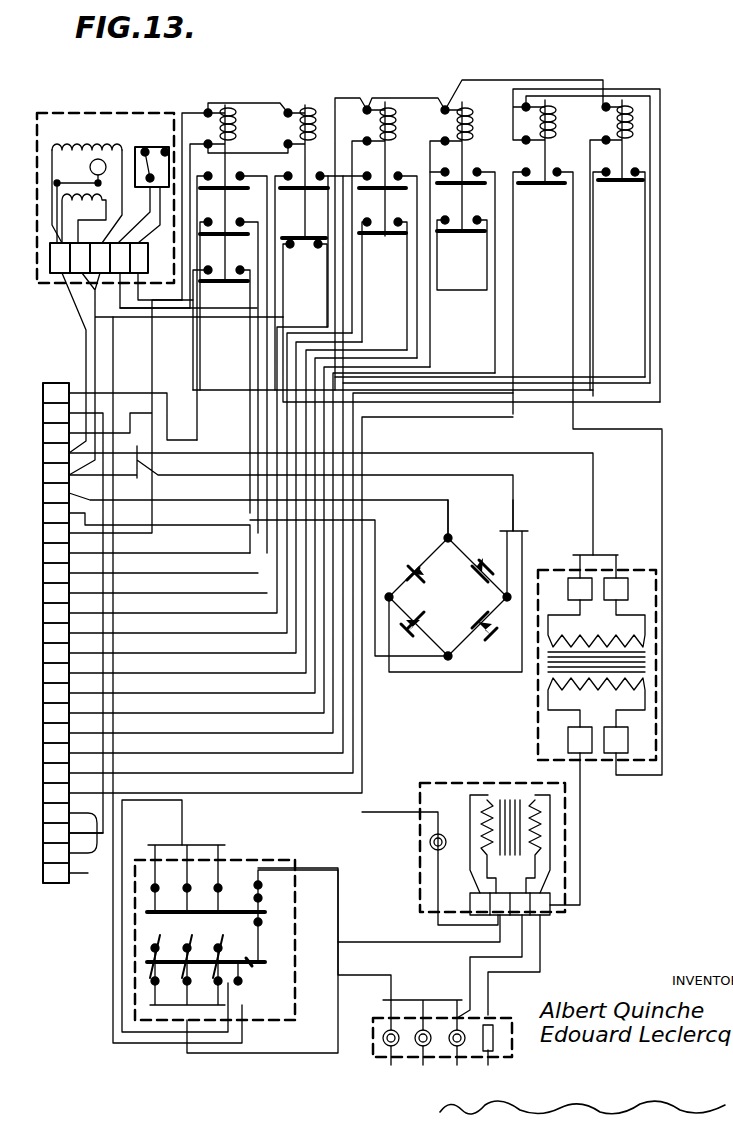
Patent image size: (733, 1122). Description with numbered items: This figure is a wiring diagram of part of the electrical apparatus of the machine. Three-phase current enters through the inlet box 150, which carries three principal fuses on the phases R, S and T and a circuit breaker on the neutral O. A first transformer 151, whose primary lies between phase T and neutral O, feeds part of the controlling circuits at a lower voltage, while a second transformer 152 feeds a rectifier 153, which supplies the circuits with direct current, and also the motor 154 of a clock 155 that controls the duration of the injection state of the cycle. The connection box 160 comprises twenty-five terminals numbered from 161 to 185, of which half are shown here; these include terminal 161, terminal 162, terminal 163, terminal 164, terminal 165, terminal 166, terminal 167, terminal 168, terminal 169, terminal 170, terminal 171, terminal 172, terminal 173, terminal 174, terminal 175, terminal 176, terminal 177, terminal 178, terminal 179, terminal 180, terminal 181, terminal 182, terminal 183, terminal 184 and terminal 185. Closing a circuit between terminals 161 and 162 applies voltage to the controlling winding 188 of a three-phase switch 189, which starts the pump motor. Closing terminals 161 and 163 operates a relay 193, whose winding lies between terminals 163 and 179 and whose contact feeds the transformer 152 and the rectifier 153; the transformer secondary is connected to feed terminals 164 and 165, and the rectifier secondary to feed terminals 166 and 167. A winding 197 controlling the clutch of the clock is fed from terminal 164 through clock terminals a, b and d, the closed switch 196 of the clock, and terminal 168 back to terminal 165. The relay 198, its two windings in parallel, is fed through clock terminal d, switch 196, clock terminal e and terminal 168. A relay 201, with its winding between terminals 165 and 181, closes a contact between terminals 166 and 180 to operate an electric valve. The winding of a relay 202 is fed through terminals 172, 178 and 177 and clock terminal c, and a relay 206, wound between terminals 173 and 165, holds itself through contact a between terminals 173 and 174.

The inlet box 150 is at (515, 1018).
The first transformer 151 is at (503, 793).
The second transformer 152 is at (540, 690).
The rectifier 153 is at (389, 586).
The motor of the clock 154 is at (88, 143).
The clock 155 is at (90, 118).
The connection box 160 is at (57, 383).
The terminal 161 is at (56, 393).
The terminal 162 is at (56, 413).
The terminal 163 is at (56, 433).
The feed terminal 164 is at (56, 453).
The feed terminal 165 is at (56, 473).
The feed terminal 166 is at (56, 493).
The feed terminal 167 is at (56, 513).
The terminal 168 is at (56, 533).
The terminal 169 is at (56, 553).
The terminal 170 is at (56, 573).
The terminal 171 is at (56, 593).
The terminal 172 is at (56, 613).
The terminal 173 is at (56, 633).
The terminal 174 is at (56, 653).
The terminal 175 is at (56, 673).
The terminal 176 is at (56, 693).
The terminal 177 is at (56, 713).
The terminal 178 is at (56, 733).
The terminal 179 is at (56, 753).
The terminal 180 is at (56, 773).
The terminal 181 is at (56, 793).
The terminal 182 is at (56, 813).
The terminal 183 is at (56, 833).
The terminal 184 is at (56, 853).
The terminal 185 is at (56, 873).
The controlling winding 188 is at (250, 968).
The three-phase switch 189 is at (225, 685).
The relay 193 is at (587, 243).
The switch of the clock 196 is at (153, 148).
The winding of the clutch 197 is at (92, 212).
The relay 198 is at (290, 98).
The relay 201 is at (637, 231).
The relay 202 is at (516, 217).
The relay 206 is at (390, 232).